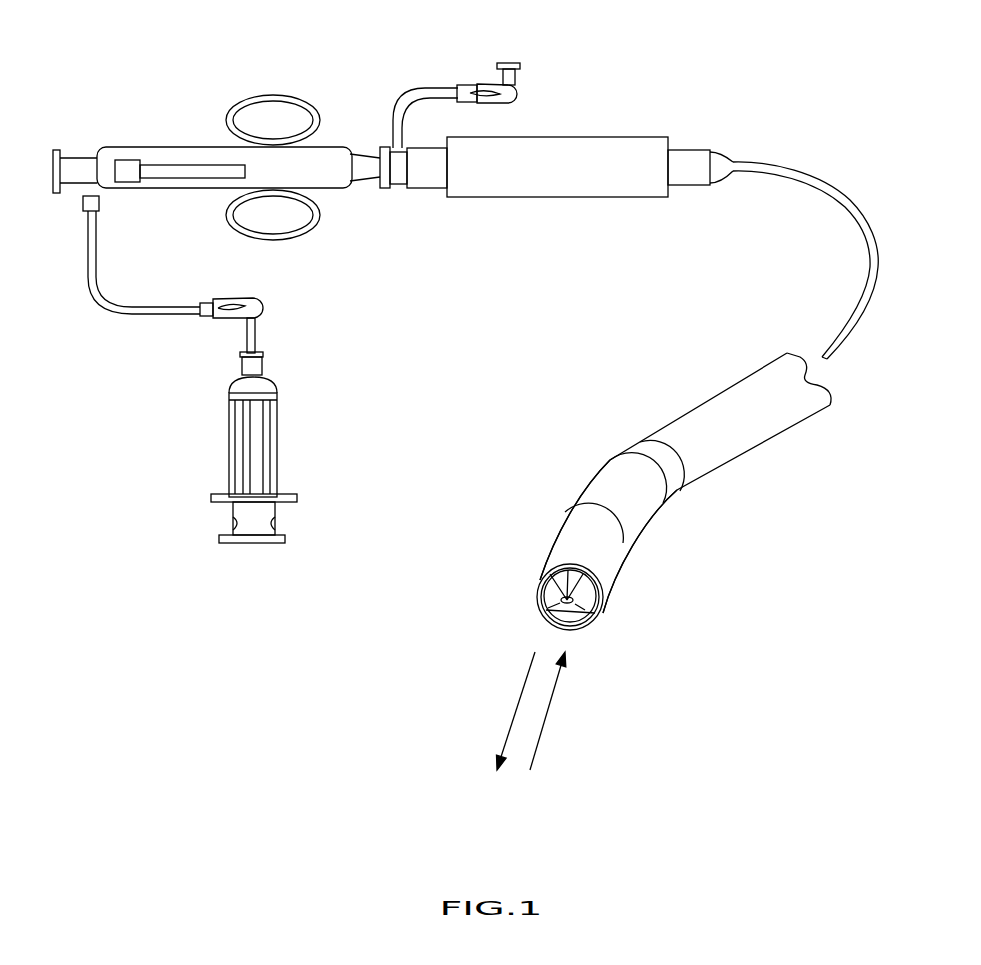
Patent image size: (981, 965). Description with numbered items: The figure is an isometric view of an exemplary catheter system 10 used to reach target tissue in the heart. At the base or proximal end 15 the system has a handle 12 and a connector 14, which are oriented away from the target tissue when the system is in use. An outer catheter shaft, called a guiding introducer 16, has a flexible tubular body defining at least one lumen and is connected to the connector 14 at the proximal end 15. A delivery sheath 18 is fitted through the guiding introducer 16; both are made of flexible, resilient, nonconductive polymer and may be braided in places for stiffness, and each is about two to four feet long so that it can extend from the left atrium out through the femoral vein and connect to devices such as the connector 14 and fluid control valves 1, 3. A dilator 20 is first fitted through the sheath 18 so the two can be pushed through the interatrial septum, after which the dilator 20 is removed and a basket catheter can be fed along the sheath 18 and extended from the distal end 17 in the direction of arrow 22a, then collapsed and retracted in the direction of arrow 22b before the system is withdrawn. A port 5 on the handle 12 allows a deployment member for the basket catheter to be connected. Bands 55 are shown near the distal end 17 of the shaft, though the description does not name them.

The fluid control valve 1 is at (512, 62).
The fluid control valve 3 is at (277, 450).
The port 5 is at (60, 148).
The catheter system 10 is at (816, 79).
The handle 12 is at (183, 147).
The connector 14 is at (573, 146).
The proximal end 15 is at (735, 148).
The guiding introducer 16 is at (853, 333).
The distal end 17 is at (553, 475).
The delivery sheath 18 is at (600, 617).
The dilator 20 is at (540, 600).
The arrow 22a is at (515, 710).
The arrow 22b is at (545, 725).
The electrode bands 55 is at (602, 500).